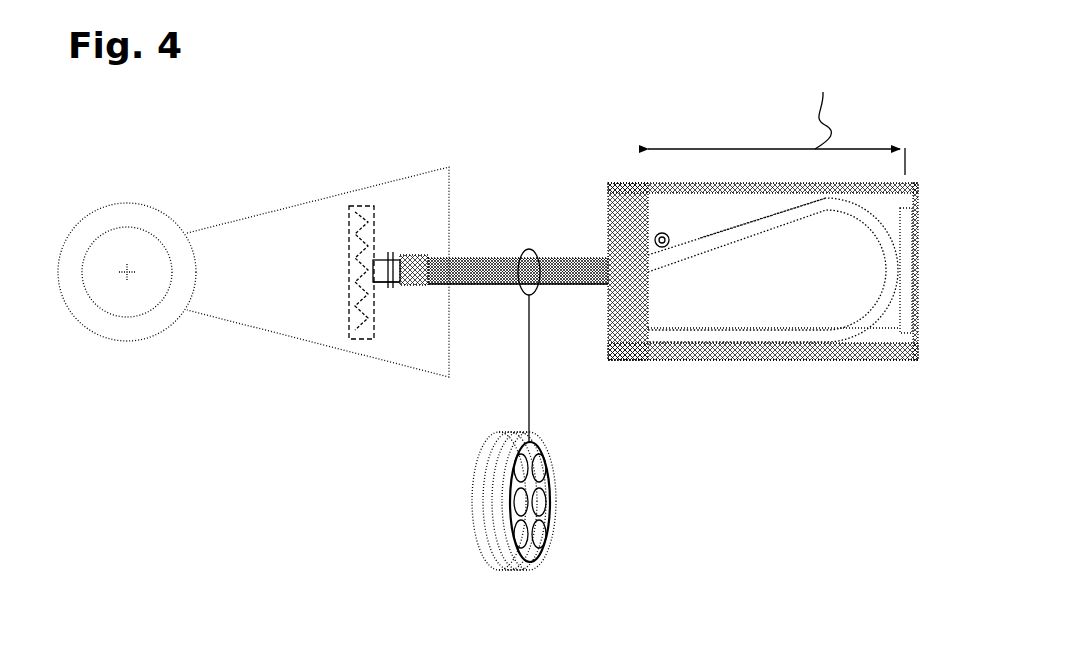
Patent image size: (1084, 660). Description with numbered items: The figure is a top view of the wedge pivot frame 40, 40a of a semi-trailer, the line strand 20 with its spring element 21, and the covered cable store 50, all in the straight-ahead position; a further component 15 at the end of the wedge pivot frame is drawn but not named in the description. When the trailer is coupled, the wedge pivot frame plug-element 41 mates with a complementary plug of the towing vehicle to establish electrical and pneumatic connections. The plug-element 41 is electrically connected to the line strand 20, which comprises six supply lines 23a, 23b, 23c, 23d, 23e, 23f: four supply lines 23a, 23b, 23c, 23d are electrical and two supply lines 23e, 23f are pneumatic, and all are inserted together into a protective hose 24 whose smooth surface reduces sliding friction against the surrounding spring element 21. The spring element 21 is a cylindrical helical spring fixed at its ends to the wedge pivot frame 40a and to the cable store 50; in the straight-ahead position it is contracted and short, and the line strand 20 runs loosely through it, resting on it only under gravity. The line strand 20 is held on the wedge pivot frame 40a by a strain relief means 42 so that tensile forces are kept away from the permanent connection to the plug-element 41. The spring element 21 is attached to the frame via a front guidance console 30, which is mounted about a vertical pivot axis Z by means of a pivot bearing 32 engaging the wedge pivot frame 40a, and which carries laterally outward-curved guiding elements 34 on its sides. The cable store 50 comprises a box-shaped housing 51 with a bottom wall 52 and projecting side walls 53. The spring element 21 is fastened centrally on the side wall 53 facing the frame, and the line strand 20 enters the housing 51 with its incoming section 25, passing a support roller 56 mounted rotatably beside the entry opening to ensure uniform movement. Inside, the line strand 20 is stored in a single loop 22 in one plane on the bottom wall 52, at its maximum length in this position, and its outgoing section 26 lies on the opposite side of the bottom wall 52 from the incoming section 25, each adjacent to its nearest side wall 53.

The drive pulley 15 is at (118, 229).
The line strand 20 is at (380, 285).
The spring element 21 is at (518, 262).
The loop 22 is at (882, 321).
The supply line 23a is at (520, 466).
The supply line 23b is at (538, 465).
The supply line 23c is at (520, 503).
The supply line 23d is at (543, 502).
The supply line 23e is at (521, 533).
The supply line 23f is at (540, 533).
The protective hose 24 is at (538, 562).
The incoming section 25 is at (693, 250).
The outgoing section 26 is at (661, 337).
The front guidance console 30 is at (407, 257).
The pivot bearing 32 is at (419, 268).
The guiding elements 34 is at (440, 287).
The spring element 40 is at (277, 211).
The wedge pivot frame 40a is at (361, 272).
The wedge pivot frame plug-element 41 is at (353, 206).
The strain relief means 42 is at (385, 253).
The cable store 50 is at (718, 120).
The housing 51 is at (754, 368).
The bottom wall 52 is at (803, 285).
The side walls 53 is at (609, 305).
The support roller 56 is at (652, 240).
The vertical pivot axis Z is at (418, 284).